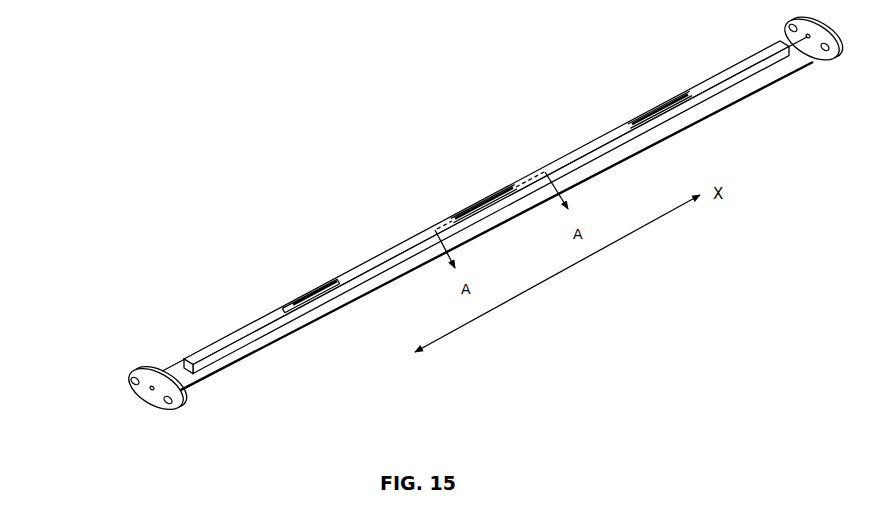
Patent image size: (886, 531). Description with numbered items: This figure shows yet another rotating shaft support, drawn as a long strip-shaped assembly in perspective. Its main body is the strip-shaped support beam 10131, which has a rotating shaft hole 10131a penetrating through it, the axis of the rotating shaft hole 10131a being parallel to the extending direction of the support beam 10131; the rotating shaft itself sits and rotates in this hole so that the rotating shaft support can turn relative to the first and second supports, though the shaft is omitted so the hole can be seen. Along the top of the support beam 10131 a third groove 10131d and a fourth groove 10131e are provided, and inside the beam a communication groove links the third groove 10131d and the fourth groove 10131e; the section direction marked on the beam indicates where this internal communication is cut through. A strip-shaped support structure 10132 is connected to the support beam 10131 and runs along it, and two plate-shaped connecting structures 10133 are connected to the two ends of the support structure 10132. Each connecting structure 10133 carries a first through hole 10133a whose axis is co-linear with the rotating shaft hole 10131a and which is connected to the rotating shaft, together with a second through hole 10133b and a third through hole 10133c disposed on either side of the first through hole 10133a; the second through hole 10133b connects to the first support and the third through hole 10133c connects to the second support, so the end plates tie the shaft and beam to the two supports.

The support beam 10131 is at (398, 250).
The rotating shaft hole 10131a is at (195, 375).
The third groove 10131d is at (305, 296).
The fourth groove 10131e is at (279, 311).
The support structure 10132 is at (181, 380).
The connecting structure 10133 is at (149, 369).
The first through hole 10133a is at (149, 390).
The second through hole 10133b is at (131, 382).
The third through hole 10133c is at (168, 404).